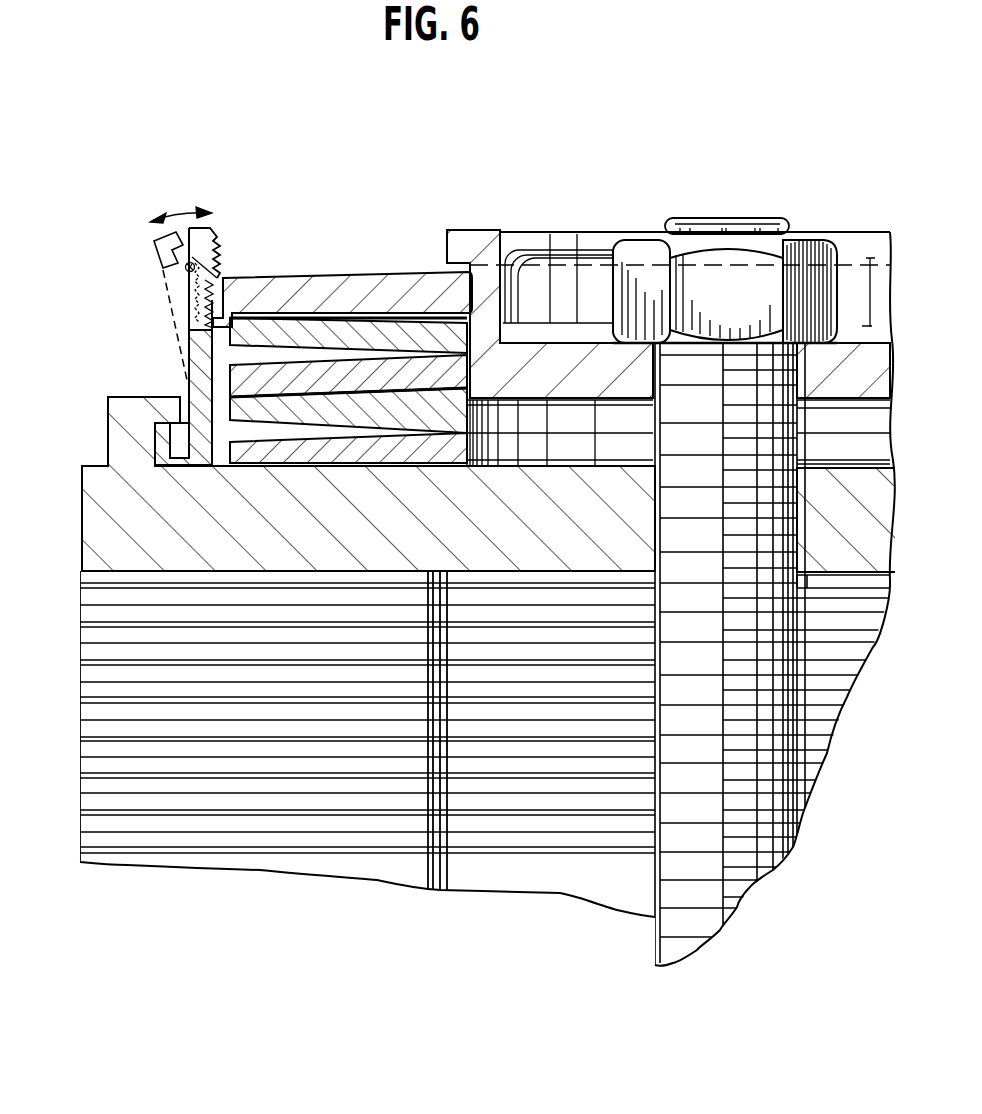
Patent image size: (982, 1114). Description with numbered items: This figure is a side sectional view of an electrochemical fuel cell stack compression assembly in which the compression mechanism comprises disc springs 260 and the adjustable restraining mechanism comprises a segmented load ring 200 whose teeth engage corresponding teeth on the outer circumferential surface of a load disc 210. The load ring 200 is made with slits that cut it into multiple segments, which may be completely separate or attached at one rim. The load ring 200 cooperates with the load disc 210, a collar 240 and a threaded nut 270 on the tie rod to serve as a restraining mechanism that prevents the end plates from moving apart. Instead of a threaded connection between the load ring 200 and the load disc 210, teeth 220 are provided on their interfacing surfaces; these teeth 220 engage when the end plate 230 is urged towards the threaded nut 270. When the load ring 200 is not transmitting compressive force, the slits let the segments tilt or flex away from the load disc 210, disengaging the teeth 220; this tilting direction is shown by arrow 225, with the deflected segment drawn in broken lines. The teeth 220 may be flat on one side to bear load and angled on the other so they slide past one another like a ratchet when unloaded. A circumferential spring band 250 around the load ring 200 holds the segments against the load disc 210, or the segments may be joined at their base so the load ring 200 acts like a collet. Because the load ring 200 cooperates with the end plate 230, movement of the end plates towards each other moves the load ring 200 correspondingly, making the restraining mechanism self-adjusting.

The load ring 200 is at (187, 352).
The load disc 210 is at (424, 297).
The teeth 220 is at (218, 247).
The arrow 225 is at (170, 212).
The end plate 230 is at (133, 408).
The collar 240 is at (462, 255).
The circumferential spring band 250 is at (153, 255).
The disc springs 260 is at (386, 378).
The threaded nut 270 is at (622, 283).